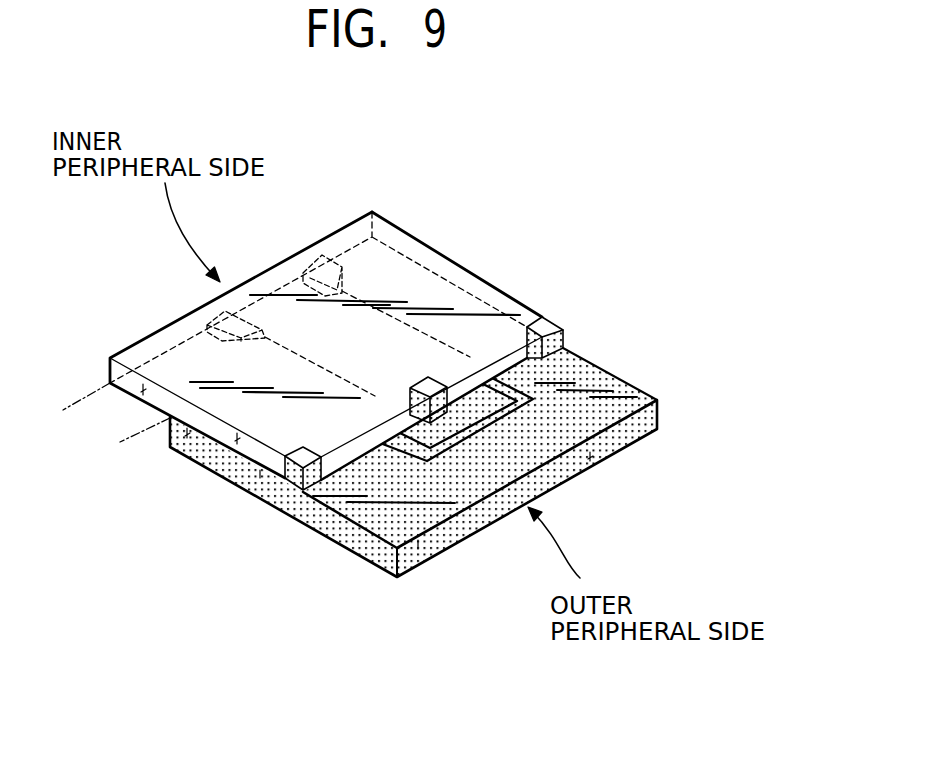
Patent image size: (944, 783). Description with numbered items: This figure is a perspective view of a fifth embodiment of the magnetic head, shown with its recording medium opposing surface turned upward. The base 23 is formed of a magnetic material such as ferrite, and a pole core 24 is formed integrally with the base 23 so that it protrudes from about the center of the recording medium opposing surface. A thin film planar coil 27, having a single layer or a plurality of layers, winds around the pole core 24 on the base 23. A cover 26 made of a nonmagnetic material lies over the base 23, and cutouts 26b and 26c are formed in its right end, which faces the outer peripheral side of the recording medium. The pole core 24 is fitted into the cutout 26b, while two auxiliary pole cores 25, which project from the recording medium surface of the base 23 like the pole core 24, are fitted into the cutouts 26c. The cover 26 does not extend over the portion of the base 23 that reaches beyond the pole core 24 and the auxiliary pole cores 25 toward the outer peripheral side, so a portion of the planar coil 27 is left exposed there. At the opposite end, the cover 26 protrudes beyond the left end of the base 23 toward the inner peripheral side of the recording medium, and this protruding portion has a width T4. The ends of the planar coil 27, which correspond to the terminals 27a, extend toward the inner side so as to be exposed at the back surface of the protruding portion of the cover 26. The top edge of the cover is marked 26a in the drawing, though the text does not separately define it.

The base 23 is at (598, 380).
The pole core 24 is at (436, 382).
The auxiliary pole core 25 is at (557, 313).
The cover 26 is at (403, 277).
The upper plate top edge 26a is at (386, 232).
The cutout 26b is at (418, 377).
The cutout 26c is at (541, 314).
The thin film planar coil 27 is at (587, 356).
The terminal 27a is at (205, 310).
The width T4 is at (130, 435).